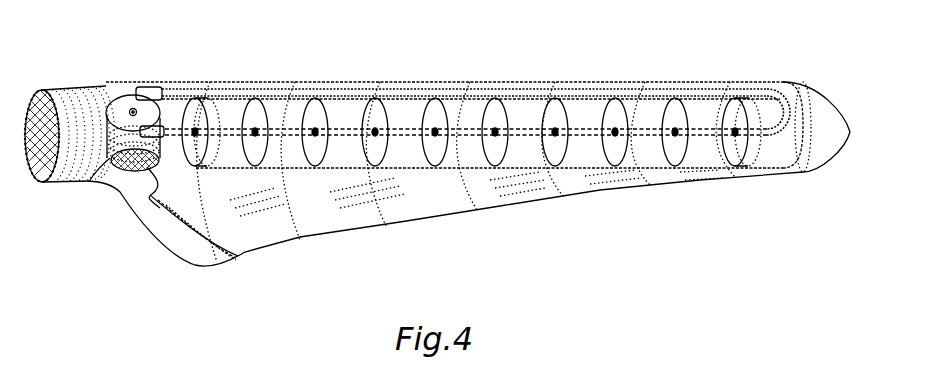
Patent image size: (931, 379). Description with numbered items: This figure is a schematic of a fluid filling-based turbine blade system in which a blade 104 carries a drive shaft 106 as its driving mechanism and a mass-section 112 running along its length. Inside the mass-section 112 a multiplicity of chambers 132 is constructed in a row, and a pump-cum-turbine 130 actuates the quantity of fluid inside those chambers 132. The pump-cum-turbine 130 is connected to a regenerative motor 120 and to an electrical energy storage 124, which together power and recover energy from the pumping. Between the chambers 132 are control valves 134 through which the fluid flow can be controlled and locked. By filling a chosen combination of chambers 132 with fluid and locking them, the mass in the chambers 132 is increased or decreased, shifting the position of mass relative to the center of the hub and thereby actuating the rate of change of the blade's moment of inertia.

The blade 104 is at (252, 237).
The drive shaft 106 is at (134, 107).
The mass-section 112 is at (537, 172).
The regenerative motor 120 is at (88, 182).
The electrical energy storage 124 is at (123, 192).
The pump-cum-turbine 130 is at (126, 106).
The chambers 132 is at (347, 112).
The control valves 134 is at (374, 142).